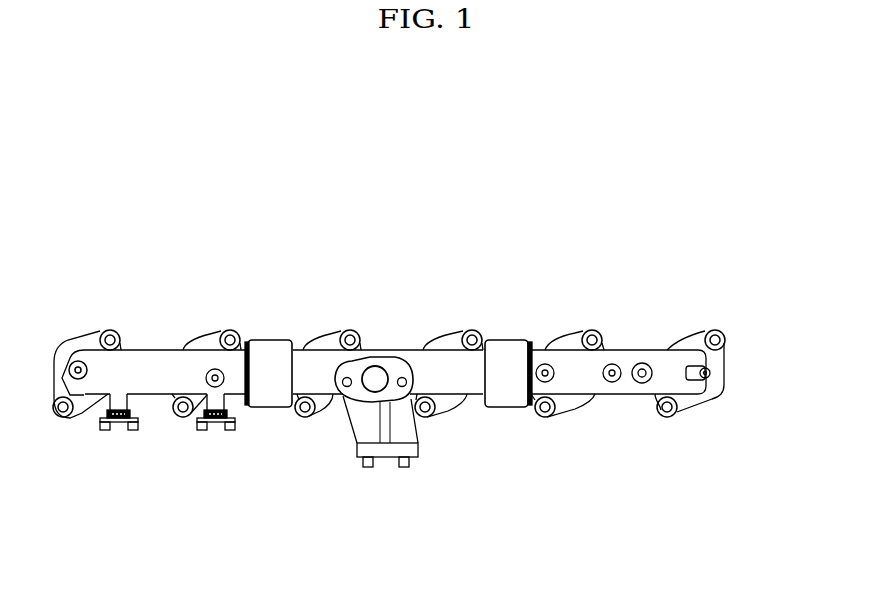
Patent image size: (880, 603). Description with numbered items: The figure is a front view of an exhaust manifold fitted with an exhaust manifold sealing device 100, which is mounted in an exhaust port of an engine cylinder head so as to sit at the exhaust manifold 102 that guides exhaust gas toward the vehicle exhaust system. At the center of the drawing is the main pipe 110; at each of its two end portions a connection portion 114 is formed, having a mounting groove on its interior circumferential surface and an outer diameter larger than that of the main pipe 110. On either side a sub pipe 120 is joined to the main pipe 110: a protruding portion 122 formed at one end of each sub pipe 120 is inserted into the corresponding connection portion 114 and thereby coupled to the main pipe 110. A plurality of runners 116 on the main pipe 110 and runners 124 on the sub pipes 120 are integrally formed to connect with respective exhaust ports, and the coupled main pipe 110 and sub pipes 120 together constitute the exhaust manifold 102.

The exhaust manifold sealing device 100 is at (379, 253).
The exhaust manifold 102 is at (497, 507).
The main pipe 110 is at (465, 380).
The connection portion 114 is at (502, 352).
The runner 116 is at (327, 340).
The sub pipe 120 is at (152, 358).
The protruding portion 122 is at (247, 350).
The runner 124 is at (680, 342).